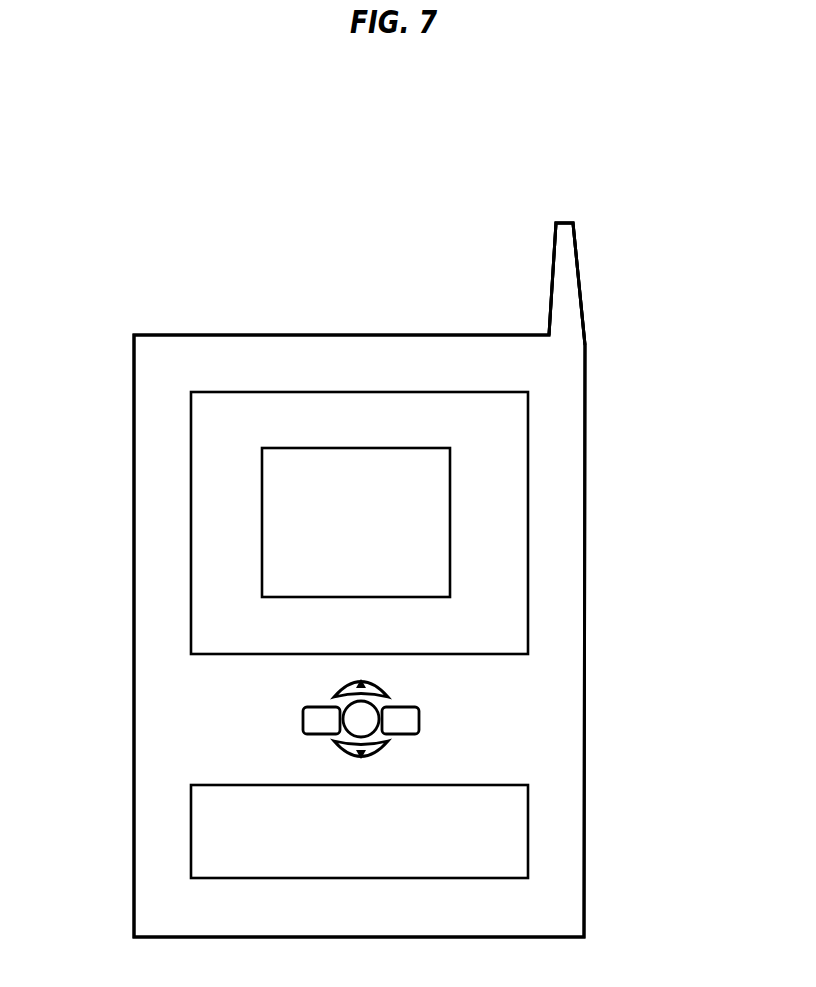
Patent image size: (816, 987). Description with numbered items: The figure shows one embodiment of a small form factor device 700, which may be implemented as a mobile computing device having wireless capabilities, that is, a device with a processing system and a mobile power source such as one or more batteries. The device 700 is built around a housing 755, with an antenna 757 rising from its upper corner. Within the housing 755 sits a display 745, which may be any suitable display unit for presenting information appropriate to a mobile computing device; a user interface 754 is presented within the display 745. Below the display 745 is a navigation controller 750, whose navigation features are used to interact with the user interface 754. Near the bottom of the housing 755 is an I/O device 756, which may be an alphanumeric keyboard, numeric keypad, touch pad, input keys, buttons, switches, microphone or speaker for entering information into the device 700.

The device 700 is at (152, 243).
The display 745 is at (530, 410).
The navigation controller 750 is at (431, 712).
The user interface 754 is at (452, 538).
The housing 755 is at (588, 634).
The I/O device 756 is at (530, 822).
The antenna 757 is at (550, 272).